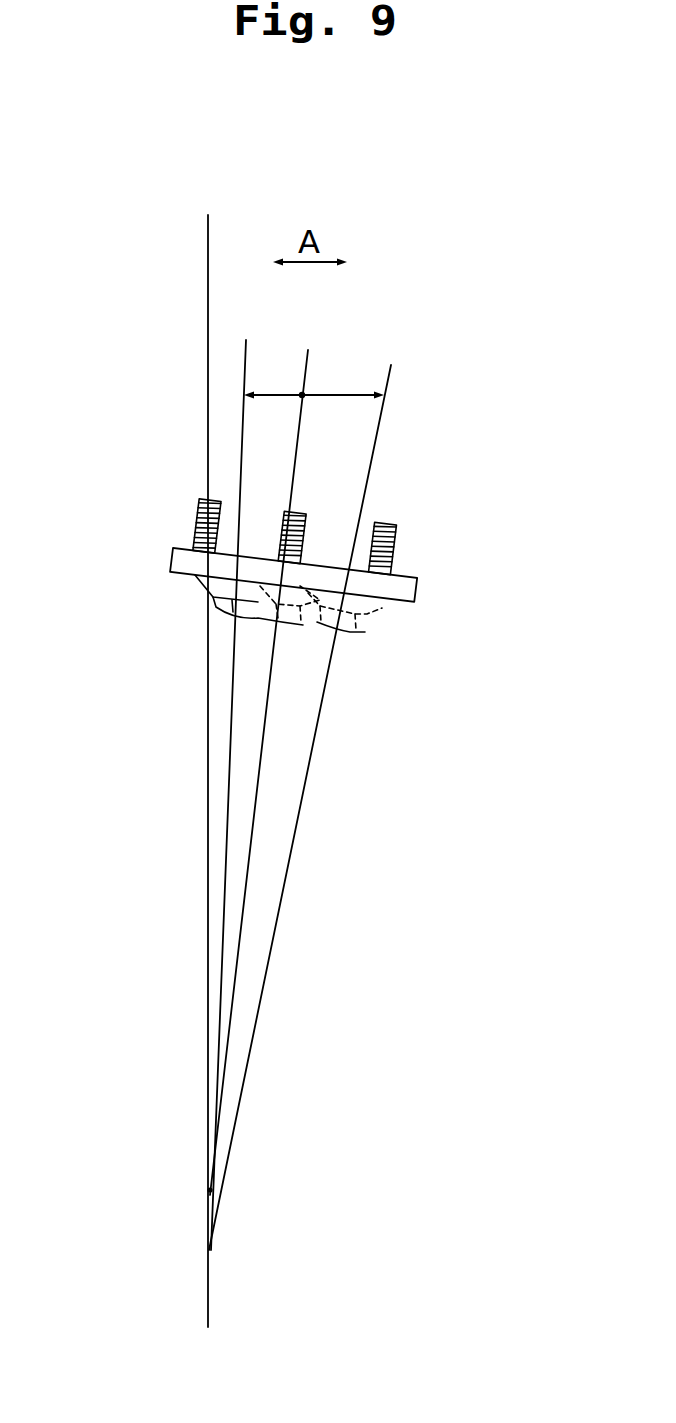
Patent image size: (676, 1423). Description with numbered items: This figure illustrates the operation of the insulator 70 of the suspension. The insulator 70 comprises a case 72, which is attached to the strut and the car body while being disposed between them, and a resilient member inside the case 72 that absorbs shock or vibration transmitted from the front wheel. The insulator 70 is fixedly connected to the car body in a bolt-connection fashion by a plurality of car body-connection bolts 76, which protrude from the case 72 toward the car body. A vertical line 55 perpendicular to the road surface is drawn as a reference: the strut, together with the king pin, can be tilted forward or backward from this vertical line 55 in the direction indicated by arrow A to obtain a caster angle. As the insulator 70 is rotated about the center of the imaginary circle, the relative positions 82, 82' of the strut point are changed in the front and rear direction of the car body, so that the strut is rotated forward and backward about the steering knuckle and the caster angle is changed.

The vertical line 55 is at (207, 293).
The relative position of the strut point 82 is at (256, 795).
The relative position of the strut point 82' is at (295, 739).
The insulator 70 is at (407, 500).
The case 72 is at (415, 587).
The car body-connection bolts 76 is at (392, 535).